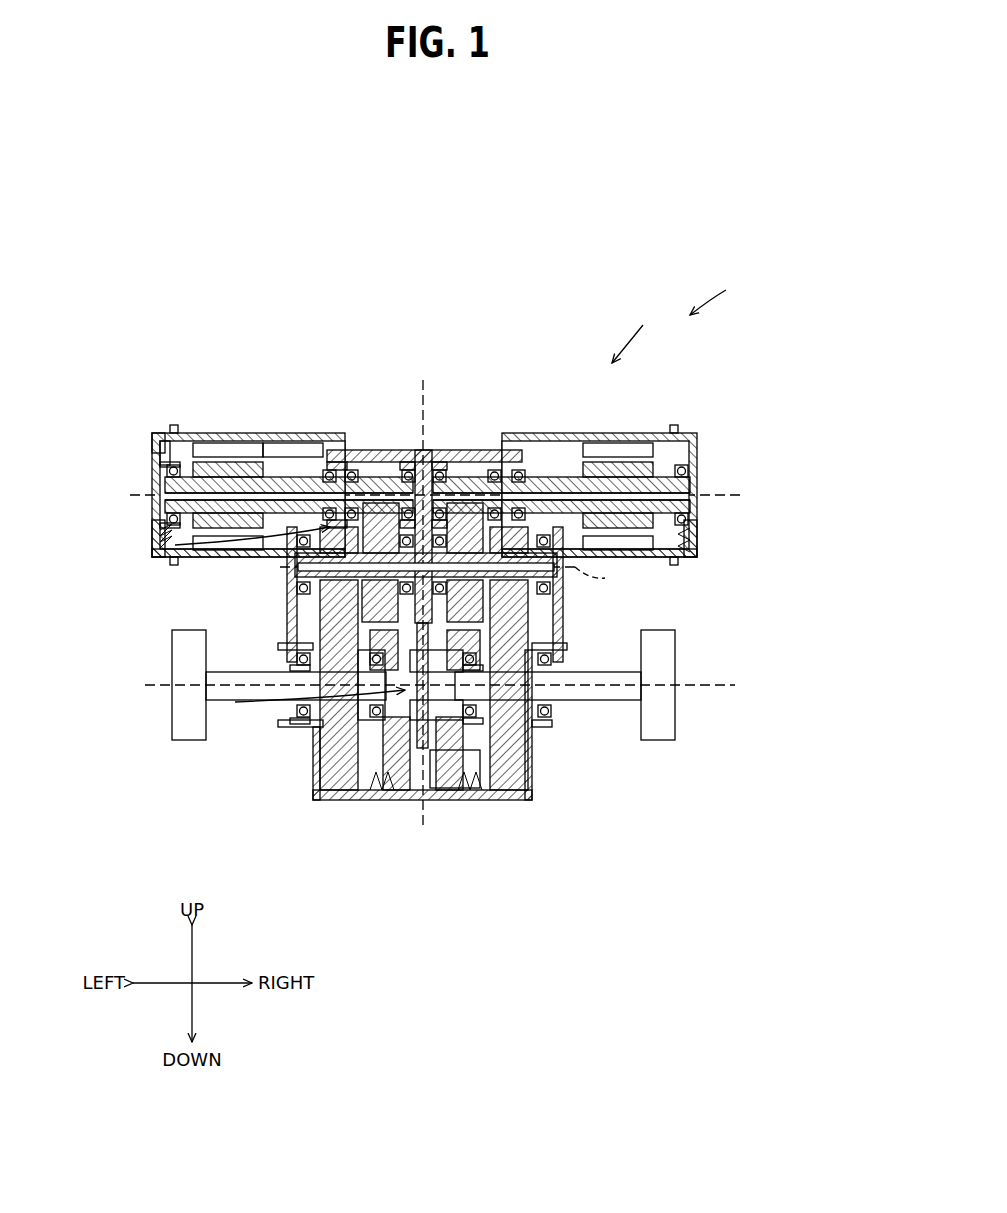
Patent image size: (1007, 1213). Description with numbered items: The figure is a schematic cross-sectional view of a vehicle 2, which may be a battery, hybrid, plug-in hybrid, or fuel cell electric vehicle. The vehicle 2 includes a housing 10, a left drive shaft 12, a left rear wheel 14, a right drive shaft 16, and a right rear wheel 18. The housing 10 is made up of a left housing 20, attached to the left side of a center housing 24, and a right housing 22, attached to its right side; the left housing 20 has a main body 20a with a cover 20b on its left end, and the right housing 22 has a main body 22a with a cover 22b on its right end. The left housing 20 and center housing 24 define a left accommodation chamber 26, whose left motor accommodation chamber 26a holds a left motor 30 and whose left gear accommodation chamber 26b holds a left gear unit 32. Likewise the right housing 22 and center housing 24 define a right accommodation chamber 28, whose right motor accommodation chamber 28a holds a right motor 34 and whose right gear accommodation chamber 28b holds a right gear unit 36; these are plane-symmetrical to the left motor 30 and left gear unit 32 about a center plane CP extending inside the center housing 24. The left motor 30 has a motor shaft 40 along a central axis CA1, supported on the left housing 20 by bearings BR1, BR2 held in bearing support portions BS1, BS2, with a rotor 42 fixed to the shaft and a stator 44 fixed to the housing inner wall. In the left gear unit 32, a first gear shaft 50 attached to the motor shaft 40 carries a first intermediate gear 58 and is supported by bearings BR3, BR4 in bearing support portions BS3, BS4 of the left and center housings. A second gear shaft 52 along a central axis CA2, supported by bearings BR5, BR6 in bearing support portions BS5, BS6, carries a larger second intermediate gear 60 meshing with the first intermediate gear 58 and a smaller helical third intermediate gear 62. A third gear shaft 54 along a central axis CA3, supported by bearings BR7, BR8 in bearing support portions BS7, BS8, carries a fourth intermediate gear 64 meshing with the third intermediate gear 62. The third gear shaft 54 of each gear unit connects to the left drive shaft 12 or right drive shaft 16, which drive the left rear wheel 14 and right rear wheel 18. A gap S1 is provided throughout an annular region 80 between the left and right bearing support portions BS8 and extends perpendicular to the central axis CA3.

The vehicle 2 is at (716, 290).
The housing 10 is at (636, 332).
The left drive shaft 12 is at (243, 700).
The left rear wheel 14 is at (185, 738).
The right drive shaft 16 is at (618, 695).
The right rear wheel 18 is at (660, 732).
The left housing 20 is at (80, 352).
The main body 20a is at (195, 445).
The cover 20b is at (172, 428).
The right housing 22 is at (733, 370).
The main body 22a is at (640, 435).
The cover 22b is at (690, 432).
The center housing 24 is at (425, 800).
The left accommodation chamber 26 is at (155, 548).
The left motor accommodation chamber 26a is at (160, 553).
The left gear accommodation chamber 26b is at (385, 795).
The right accommodation chamber 28 is at (695, 535).
The right motor accommodation chamber 28a is at (695, 551).
The right gear accommodation chamber 28b is at (470, 795).
The left motor 30 is at (165, 530).
The left gear unit 32 is at (378, 790).
The right motor 34 is at (535, 440).
The right gear unit 36 is at (505, 800).
The motor shaft 40 is at (160, 447).
The rotor 42 is at (152, 440).
The stator 44 is at (225, 447).
The first gear shaft 50 is at (370, 510).
The second gear shaft 52 is at (322, 592).
The third gear shaft 54 is at (330, 730).
The first intermediate gear 58 is at (450, 510).
The second intermediate gear 60 is at (300, 648).
The third intermediate gear 62 is at (365, 600).
The fourth intermediate gear 64 is at (355, 740).
The annular region 80 is at (300, 700).
The bearing BR1 is at (167, 476).
The bearing BR2 is at (348, 472).
The bearing BR3 is at (405, 472).
The bearing BR4 is at (436, 472).
The bearing BR5 is at (298, 572).
The bearing BR6 is at (403, 540).
The bearing BR7 is at (300, 712).
The bearing BR8 is at (377, 720).
The bearing support portion BS1 is at (165, 462).
The bearing support portion BS2 is at (335, 465).
The bearing support portion BS3 is at (402, 464).
The bearing support portion BS4 is at (437, 463).
The bearing support portion BS5 is at (290, 560).
The bearing support portion BS6 is at (300, 690).
The bearing support portion BS7 is at (305, 720).
The bearing support portion BS8 is at (468, 725).
The central axis CA1 is at (459, 491).
The central axis CA2 is at (464, 578).
The central axis CA3 is at (457, 681).
The center plane CP is at (441, 579).
The gap S1 is at (455, 790).